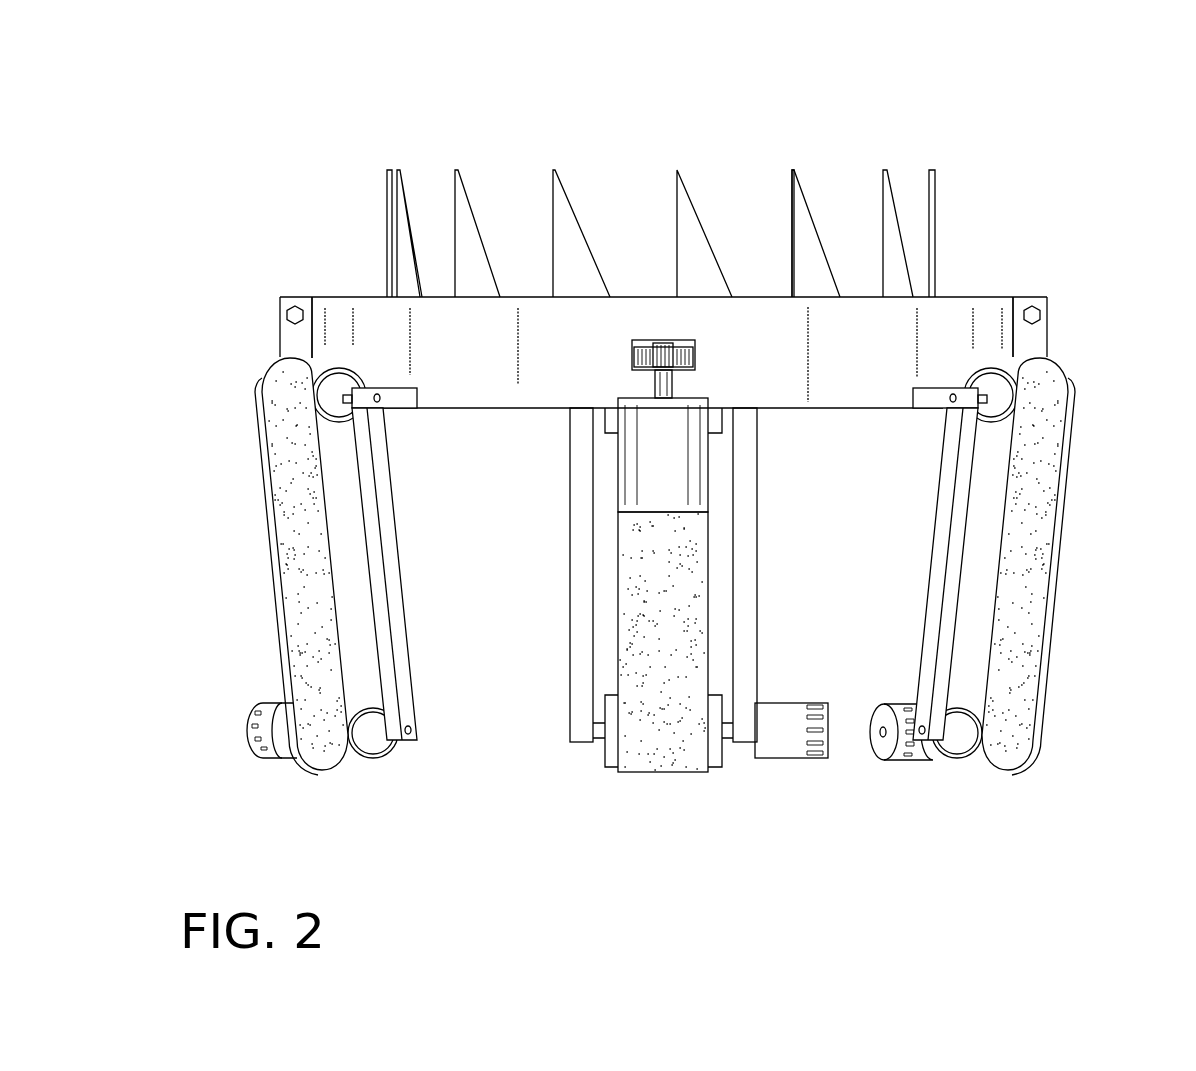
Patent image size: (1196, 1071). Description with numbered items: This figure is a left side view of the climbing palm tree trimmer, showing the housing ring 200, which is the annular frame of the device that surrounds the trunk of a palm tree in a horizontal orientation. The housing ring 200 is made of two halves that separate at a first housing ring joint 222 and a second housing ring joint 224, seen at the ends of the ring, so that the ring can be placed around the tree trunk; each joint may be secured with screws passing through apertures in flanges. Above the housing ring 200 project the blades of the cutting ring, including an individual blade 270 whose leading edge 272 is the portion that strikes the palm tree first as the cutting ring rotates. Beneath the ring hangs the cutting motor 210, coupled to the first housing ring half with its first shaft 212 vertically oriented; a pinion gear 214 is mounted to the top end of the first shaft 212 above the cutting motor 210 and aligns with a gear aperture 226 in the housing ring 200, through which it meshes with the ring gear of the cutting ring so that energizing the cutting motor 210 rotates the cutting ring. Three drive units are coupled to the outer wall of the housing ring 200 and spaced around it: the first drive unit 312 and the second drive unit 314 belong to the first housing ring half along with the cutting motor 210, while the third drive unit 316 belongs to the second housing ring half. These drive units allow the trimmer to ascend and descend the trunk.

The housing ring 200 is at (470, 395).
The first housing ring joint 222 is at (280, 340).
The second housing ring joint 224 is at (1047, 337).
The individual blade 270 is at (812, 217).
The leading edge 272 is at (788, 222).
The pinion gear 214 is at (647, 360).
The gear aperture 226 is at (687, 345).
The first shaft 212 is at (668, 382).
The cutting motor 210 is at (693, 482).
The second drive unit 314 is at (427, 795).
The third drive unit 316 is at (661, 597).
The first drive unit 312 is at (1057, 795).